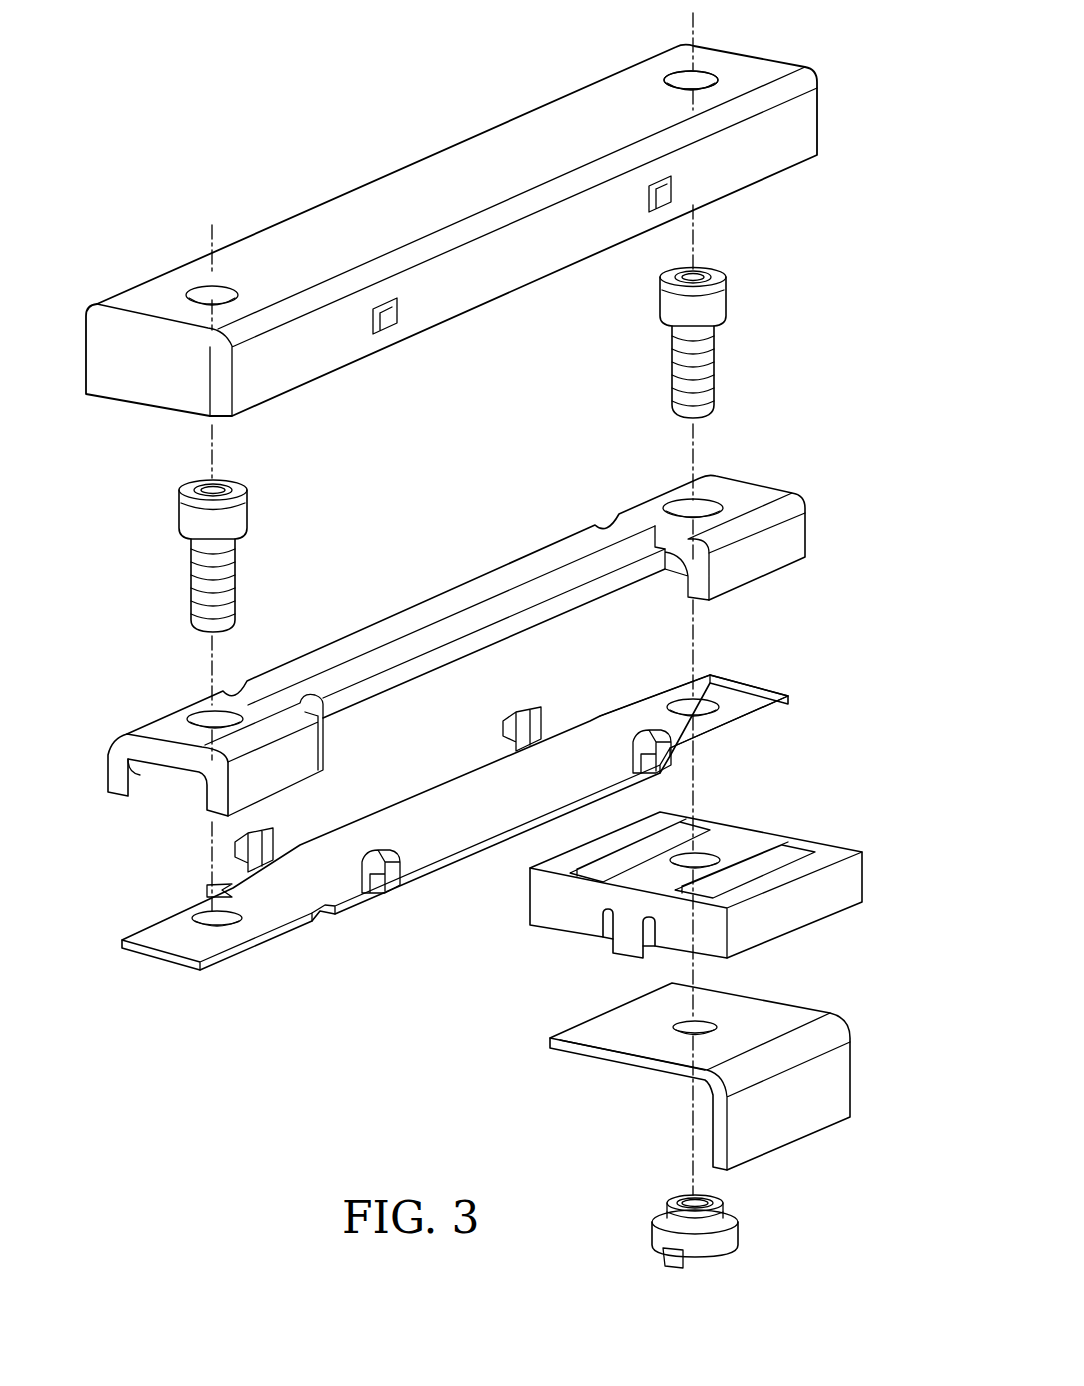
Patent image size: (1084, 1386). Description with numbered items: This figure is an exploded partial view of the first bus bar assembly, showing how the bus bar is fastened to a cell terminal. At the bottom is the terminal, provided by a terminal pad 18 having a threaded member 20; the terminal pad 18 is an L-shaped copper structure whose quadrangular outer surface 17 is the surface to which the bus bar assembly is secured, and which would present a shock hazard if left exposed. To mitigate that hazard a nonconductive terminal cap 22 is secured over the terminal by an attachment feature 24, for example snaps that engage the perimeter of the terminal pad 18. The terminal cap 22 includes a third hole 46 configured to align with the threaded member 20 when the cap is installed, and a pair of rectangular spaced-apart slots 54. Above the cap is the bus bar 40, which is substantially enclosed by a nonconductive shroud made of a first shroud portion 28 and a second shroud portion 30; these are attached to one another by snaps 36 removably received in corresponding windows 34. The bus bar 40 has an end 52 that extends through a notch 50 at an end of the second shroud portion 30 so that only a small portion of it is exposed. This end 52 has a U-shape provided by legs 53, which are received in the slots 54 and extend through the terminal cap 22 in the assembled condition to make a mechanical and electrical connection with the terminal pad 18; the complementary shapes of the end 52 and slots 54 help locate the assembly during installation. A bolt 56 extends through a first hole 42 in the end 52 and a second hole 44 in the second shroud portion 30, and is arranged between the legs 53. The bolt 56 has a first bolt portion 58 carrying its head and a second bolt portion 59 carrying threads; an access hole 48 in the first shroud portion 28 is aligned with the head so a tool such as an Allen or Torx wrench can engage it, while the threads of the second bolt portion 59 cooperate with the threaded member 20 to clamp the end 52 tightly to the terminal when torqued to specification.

The quadrangular outer surface 17 is at (773, 1018).
The terminal pad 18 is at (635, 1063).
The threaded member 20 is at (722, 1250).
The terminal cap 22 is at (803, 912).
The attachment feature 24 is at (622, 937).
The first shroud portion 28 is at (463, 144).
The second shroud portion 30 is at (485, 772).
The window 34 is at (395, 316).
The snap 36 is at (395, 872).
The bus bar 40 is at (527, 572).
The first hole 42 is at (707, 507).
The second hole 44 is at (710, 707).
The third hole 46 is at (703, 858).
The access hole 48 is at (699, 79).
The notch 50 is at (643, 707).
The end of the bus bar 52 is at (786, 539).
The legs 53 is at (732, 577).
The slot 54 is at (787, 857).
The bolt 56 is at (732, 302).
The first bolt portion 58 is at (714, 274).
The second bolt portion 59 is at (710, 378).